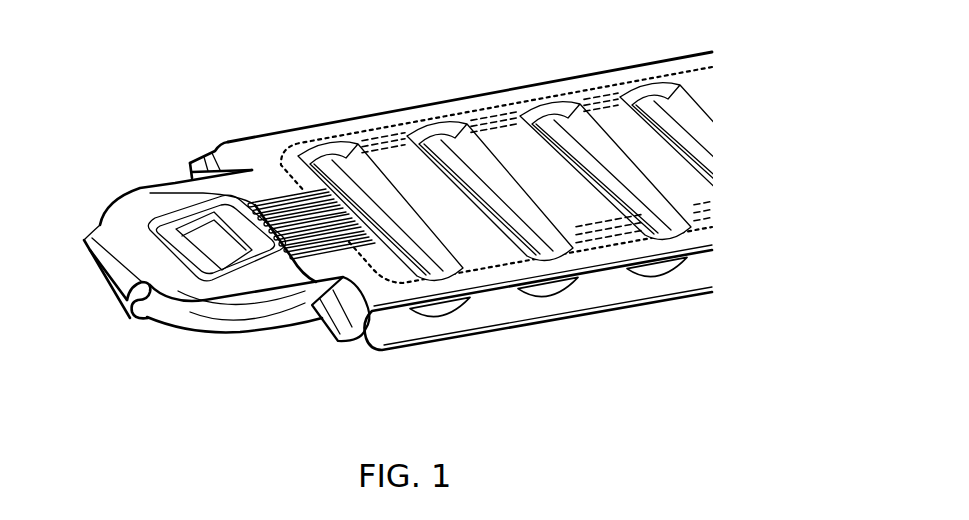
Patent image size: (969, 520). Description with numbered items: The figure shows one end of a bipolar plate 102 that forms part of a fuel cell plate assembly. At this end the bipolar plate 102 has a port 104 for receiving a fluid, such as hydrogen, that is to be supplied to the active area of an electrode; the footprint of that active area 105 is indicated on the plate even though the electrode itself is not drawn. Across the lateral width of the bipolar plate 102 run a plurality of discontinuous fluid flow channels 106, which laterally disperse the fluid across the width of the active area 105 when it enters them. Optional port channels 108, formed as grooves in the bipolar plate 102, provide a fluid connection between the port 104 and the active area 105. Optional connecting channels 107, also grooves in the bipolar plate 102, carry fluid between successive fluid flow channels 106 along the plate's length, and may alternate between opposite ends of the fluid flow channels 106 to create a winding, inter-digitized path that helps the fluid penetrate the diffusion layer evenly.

The bipolar plate 102 is at (135, 256).
The port 104 is at (210, 245).
The active area 105 is at (678, 72).
The fluid flow channels 106 is at (442, 150).
The connecting channels 107 is at (595, 243).
The port channels 108 is at (288, 205).